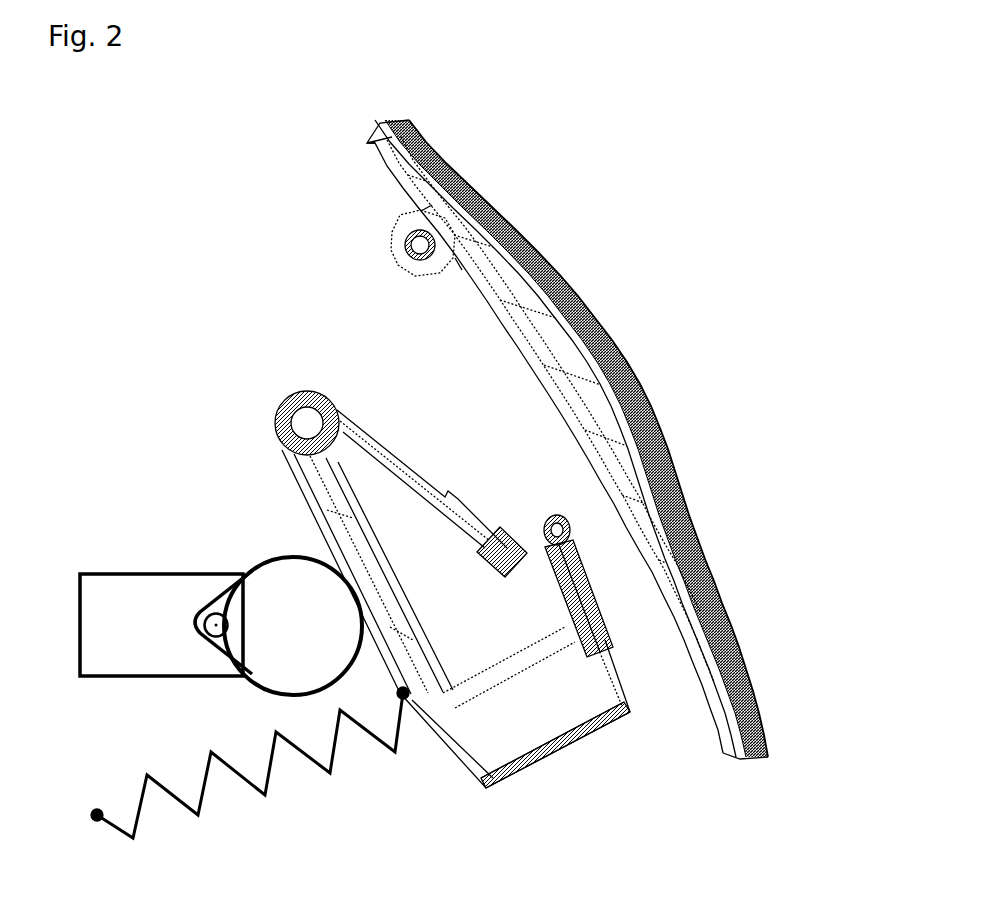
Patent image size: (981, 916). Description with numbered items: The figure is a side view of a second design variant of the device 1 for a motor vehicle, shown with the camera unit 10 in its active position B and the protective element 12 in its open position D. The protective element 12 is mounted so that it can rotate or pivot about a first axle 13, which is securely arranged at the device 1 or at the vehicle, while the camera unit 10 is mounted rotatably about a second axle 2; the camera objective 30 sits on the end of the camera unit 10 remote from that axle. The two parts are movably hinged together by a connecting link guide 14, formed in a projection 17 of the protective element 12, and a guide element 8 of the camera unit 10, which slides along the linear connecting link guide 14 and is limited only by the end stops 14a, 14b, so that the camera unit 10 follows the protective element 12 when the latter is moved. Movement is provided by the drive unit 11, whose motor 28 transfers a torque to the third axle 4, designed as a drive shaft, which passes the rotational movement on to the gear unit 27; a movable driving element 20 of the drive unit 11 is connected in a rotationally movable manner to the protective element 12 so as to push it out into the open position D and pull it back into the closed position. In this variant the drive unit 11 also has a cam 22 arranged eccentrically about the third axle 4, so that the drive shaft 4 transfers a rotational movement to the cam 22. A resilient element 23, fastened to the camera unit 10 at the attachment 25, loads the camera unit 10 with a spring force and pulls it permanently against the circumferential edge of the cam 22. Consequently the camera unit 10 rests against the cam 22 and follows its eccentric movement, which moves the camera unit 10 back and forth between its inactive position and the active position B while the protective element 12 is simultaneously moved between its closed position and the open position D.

The device 1 is at (503, 108).
The second axle 2 is at (303, 423).
The third axle 4 is at (204, 621).
The guide element 8 is at (552, 515).
The camera unit 10 is at (521, 735).
The drive unit 11 is at (162, 500).
The protective element 12 is at (598, 342).
The first axle 13 is at (418, 245).
The connecting link guide 14 is at (590, 576).
The end stop 14a is at (603, 657).
The end stop 14b is at (543, 526).
The projection 17 is at (661, 637).
The movable driving element 20 is at (260, 594).
The cam 22 is at (291, 575).
The resilient element 23 is at (195, 815).
The attachment of the resilient element 25 is at (412, 691).
The gear unit 27 is at (200, 636).
The motor 28 is at (81, 622).
The camera objective 30 is at (574, 744).
The active position B is at (594, 824).
The open position D is at (763, 806).